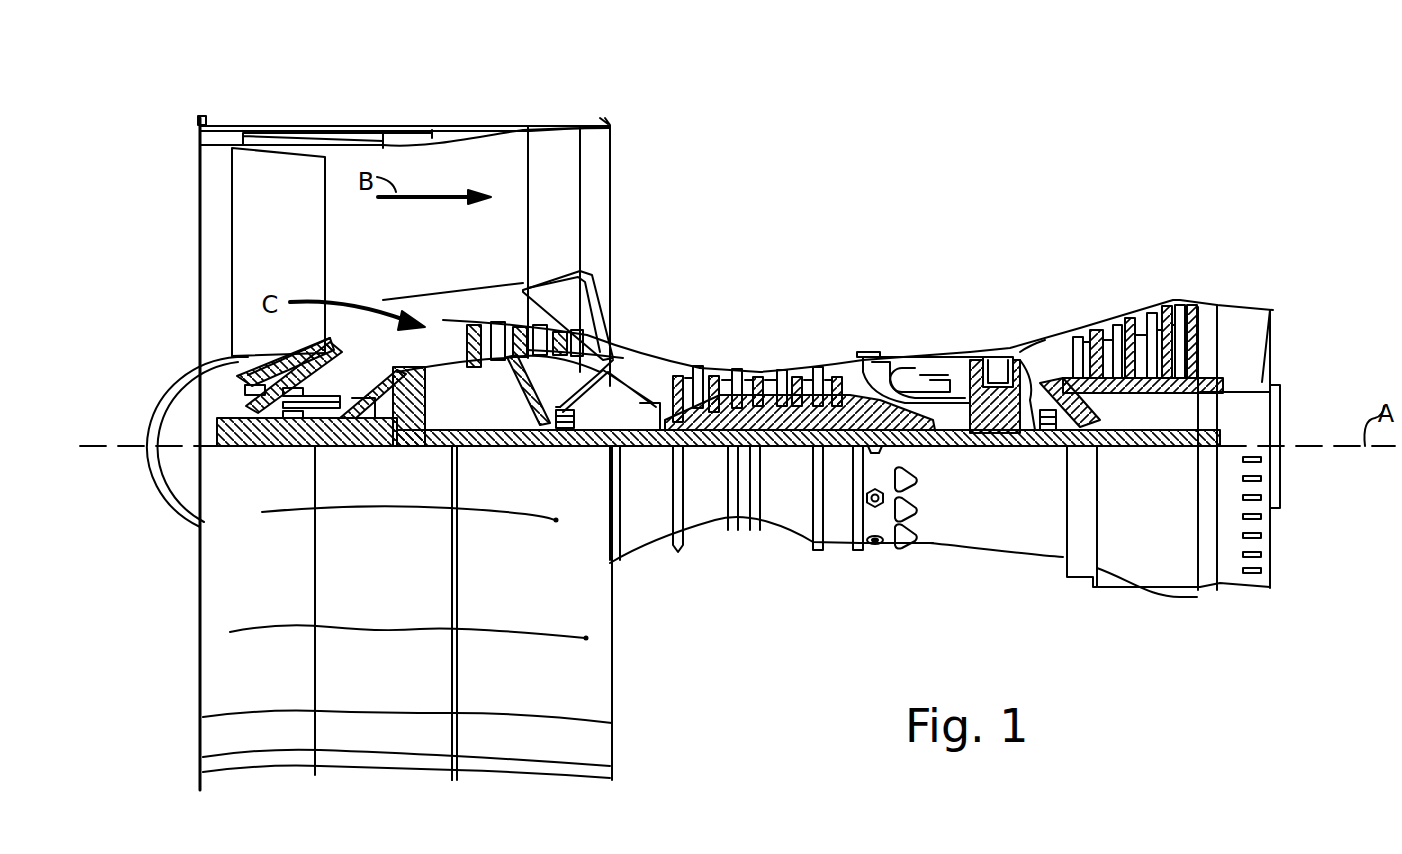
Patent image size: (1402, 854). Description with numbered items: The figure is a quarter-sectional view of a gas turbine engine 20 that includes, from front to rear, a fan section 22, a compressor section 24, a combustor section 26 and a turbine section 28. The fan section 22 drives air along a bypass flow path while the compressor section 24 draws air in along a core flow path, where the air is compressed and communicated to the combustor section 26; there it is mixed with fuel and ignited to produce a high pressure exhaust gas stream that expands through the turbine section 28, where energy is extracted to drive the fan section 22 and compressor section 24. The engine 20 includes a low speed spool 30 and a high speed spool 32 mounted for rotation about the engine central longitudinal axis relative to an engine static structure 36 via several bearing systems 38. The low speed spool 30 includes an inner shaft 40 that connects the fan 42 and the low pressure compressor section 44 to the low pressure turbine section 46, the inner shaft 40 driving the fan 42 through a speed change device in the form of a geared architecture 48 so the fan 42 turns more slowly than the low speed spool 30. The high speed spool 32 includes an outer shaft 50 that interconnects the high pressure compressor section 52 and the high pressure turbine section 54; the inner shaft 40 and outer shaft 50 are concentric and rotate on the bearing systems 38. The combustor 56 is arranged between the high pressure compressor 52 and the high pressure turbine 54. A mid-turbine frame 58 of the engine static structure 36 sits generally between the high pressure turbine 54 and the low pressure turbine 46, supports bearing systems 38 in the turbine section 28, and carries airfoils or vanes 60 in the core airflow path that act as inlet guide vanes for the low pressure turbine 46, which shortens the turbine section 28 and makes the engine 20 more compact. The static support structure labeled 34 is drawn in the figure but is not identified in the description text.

The gas turbine engine 20 is at (1058, 140).
The fan section 22 is at (430, 92).
The compressor section 24 is at (853, 233).
The combustor section 26 is at (969, 233).
The turbine section 28 is at (1222, 233).
The low speed spool 30 is at (783, 465).
The high speed spool 32 is at (812, 410).
The mid-turbine frame 34 is at (1140, 395).
The engine static structure 36 is at (838, 555).
The bearing systems 38 is at (285, 418).
The inner shaft 40 is at (637, 450).
The fan 42 is at (263, 231).
The low pressure compressor section 44 is at (537, 340).
The low pressure turbine section 46 is at (1143, 322).
The geared architecture 48 is at (410, 430).
The outer shaft 50 is at (925, 448).
The high pressure compressor section 52 is at (733, 406).
The high pressure turbine section 54 is at (1000, 352).
The combustor 56 is at (919, 383).
The mid-turbine frame 58 is at (1042, 338).
The airfoils/vanes 60 is at (1040, 372).